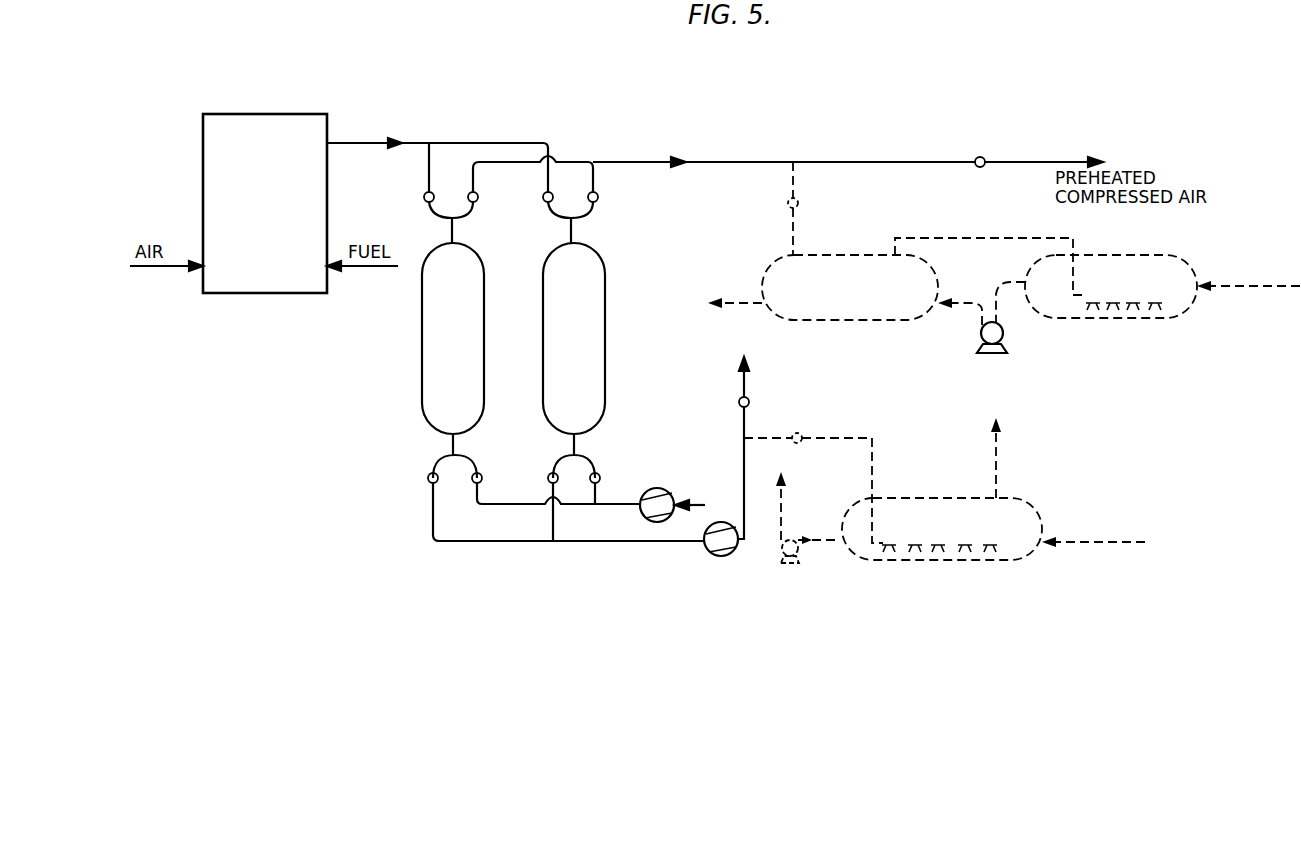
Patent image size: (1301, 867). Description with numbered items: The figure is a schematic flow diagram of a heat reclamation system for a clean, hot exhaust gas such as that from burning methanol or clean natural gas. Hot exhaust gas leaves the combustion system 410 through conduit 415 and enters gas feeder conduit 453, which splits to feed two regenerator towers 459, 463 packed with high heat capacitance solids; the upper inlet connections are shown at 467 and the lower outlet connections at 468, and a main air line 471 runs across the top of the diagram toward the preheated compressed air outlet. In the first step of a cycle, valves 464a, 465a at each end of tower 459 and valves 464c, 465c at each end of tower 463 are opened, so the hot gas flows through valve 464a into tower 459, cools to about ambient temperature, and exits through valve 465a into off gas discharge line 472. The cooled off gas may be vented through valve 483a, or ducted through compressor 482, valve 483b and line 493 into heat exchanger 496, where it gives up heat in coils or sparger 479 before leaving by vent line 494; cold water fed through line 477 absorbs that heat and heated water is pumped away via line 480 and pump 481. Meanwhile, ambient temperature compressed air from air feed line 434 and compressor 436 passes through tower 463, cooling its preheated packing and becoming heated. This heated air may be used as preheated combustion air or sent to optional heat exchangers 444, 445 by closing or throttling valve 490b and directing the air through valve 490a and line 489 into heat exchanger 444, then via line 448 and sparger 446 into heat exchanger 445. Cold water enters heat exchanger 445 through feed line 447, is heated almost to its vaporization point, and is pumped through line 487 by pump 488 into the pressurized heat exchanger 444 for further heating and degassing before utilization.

The combustion system 410 is at (283, 218).
The conduit 415 is at (365, 142).
The gas feeder conduit 453 is at (496, 141).
The preheated compressed air line 471 is at (757, 160).
The valve 464a is at (424, 199).
The valve 464c is at (500, 188).
The tank inlet junction lines 467 is at (571, 232).
The regenerator tower 459 is at (470, 362).
The regenerator tower 463 is at (591, 362).
The tank outlet junction lines 468 is at (570, 443).
The valve 465a is at (428, 482).
The valve 465c is at (480, 474).
The off gas discharge line 472 is at (587, 543).
The compressor 436 is at (650, 492).
The air feed line 434 is at (706, 489).
The compressor 482 is at (731, 553).
The valve 483a is at (749, 402).
The valve 483b is at (802, 433).
The line 480 is at (788, 535).
The pump 481 is at (783, 560).
The line 493 is at (875, 480).
The vent line 494 is at (1000, 476).
The heat exchanger 496 is at (947, 524).
The coils or sparger 479 is at (955, 543).
The line 477 is at (1085, 545).
The valve 490a is at (800, 206).
The valve 490b is at (977, 157).
The line 489 is at (797, 240).
The heat exchanger 444 is at (865, 297).
The line 448 is at (1005, 236).
The heat exchanger 445 is at (1142, 282).
The sparger 446 is at (1118, 310).
The feed line 447 is at (1225, 290).
The line 487 is at (1006, 280).
The pump 488 is at (1003, 334).